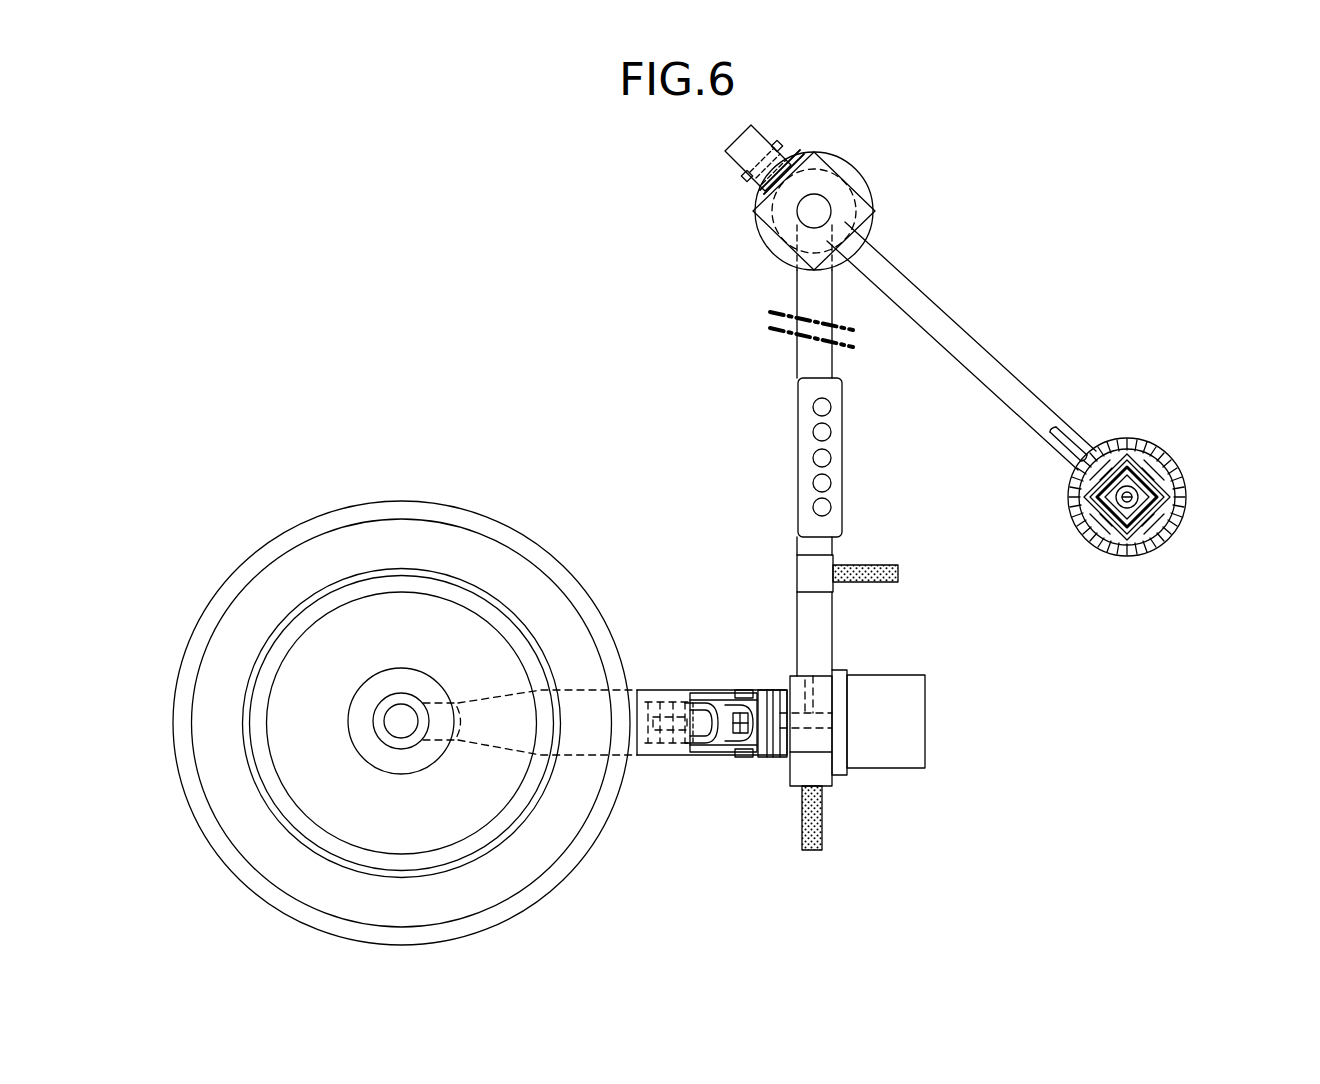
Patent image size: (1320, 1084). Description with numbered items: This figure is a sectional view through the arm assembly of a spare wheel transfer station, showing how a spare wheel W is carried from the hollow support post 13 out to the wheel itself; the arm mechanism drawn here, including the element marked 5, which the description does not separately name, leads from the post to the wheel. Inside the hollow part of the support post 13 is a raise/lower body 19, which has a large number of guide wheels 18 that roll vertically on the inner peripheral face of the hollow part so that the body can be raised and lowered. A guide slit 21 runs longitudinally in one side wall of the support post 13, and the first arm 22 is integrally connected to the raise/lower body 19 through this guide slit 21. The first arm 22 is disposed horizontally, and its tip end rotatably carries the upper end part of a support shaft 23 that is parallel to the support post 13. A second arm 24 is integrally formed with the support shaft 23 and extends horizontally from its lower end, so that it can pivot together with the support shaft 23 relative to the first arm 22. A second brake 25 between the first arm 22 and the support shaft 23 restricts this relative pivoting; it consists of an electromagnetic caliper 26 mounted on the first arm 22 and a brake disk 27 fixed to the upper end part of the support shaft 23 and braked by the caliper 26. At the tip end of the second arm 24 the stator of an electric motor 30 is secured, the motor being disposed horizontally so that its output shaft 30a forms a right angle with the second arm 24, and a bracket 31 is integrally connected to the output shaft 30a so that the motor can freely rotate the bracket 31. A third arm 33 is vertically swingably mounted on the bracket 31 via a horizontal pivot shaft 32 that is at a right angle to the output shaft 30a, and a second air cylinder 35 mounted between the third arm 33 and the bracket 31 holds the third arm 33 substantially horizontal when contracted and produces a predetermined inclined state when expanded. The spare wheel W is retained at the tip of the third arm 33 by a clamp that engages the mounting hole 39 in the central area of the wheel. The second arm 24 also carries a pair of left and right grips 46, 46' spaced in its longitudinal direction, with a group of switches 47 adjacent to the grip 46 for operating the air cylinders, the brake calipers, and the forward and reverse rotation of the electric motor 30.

The spare wheel W is at (563, 848).
The mounting hole 39 is at (405, 707).
The arm 5 is at (670, 765).
The third arm 33 is at (702, 752).
The second air cylinder 35 is at (716, 703).
The horizontal pivot shaft 32 is at (746, 741).
The bracket 31 is at (778, 760).
The electric motor 30 is at (905, 740).
The output shaft 30a is at (813, 676).
The grip 46' is at (855, 855).
The second arm 24 is at (801, 287).
The group of switches 47 is at (848, 394).
The grip 46 is at (893, 547).
The brake disk 27 is at (862, 178).
The support shaft 23 is at (775, 250).
The electromagnetic caliper 26 is at (753, 143).
The second brake 25 is at (735, 175).
The first arm 22 is at (960, 335).
The guide slit 21 is at (1090, 450).
The guide wheels 18 is at (1145, 470).
The raise/lower body 19 is at (1165, 510).
The support post 13 is at (1126, 555).